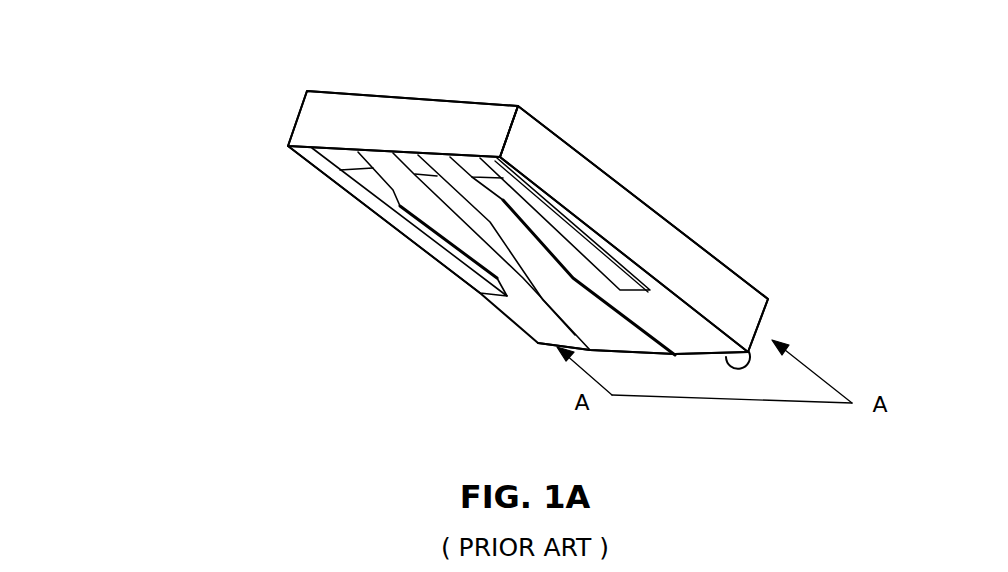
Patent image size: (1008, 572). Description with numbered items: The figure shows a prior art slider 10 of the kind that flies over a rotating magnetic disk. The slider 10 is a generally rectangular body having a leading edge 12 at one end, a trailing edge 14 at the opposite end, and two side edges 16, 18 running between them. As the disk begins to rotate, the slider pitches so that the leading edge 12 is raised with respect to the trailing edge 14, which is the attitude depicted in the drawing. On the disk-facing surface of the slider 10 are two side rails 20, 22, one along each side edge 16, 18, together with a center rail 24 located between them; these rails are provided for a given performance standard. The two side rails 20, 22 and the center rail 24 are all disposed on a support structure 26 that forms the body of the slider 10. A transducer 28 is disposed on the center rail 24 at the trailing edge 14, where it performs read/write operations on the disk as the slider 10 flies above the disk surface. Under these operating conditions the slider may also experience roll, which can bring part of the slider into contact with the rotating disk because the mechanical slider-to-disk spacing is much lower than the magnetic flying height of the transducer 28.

The slider 10 is at (672, 170).
The leading edge 12 is at (375, 151).
The trailing edge 14 is at (750, 352).
The side edge 16 is at (698, 275).
The side edge 18 is at (413, 252).
The side rail 20 is at (535, 213).
The side rail 22 is at (375, 182).
The center rail 24 is at (580, 308).
The support structure 26 is at (523, 307).
The transducer 28 is at (630, 357).